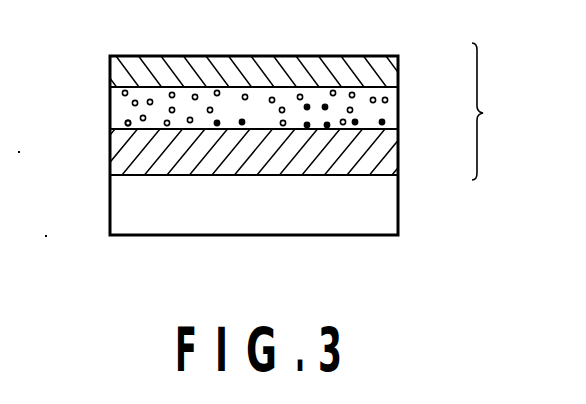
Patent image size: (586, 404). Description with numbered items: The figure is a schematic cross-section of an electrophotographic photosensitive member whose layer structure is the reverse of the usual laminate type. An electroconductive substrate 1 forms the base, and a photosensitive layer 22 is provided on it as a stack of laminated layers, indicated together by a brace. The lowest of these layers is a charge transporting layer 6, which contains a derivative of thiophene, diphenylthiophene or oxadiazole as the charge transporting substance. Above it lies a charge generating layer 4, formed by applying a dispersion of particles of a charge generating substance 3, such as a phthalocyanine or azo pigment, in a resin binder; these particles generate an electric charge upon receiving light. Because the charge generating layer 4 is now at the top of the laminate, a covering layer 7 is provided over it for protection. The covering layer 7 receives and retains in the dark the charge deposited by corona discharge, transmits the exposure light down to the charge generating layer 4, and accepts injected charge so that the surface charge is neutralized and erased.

The electroconductive substrate 1 is at (398, 208).
The charge generating substance 3 is at (124, 122).
The charge generating layer 4 is at (398, 117).
The charge transporting layer 6 is at (398, 150).
The covering layer 7 is at (398, 75).
The photosensitive layer 22 is at (502, 111).